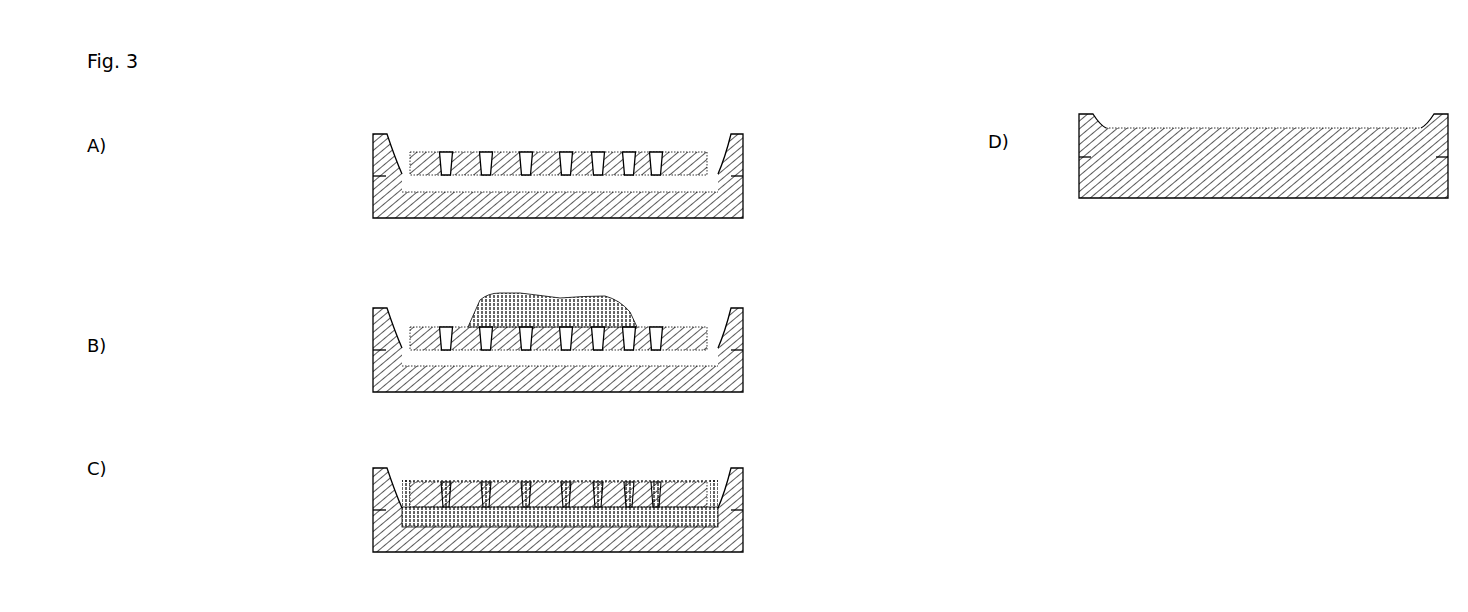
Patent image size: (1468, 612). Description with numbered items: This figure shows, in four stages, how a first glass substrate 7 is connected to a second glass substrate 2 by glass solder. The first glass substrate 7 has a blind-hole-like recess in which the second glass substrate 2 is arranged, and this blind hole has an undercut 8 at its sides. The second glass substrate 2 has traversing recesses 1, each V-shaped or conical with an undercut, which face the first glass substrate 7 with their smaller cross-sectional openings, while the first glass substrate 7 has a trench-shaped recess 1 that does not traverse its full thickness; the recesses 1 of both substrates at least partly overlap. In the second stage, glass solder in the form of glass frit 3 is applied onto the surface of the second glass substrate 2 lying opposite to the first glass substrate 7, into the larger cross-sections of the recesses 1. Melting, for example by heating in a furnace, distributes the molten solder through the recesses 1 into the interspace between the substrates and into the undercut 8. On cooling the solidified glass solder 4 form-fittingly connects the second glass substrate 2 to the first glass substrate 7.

The recesses 1 is at (510, 185).
The second glass substrate 2 is at (677, 150).
The glass frit 3 is at (538, 292).
The solidified glass solder 4 is at (427, 477).
The first glass substrate 7 is at (746, 200).
The undercut 8 is at (400, 180).